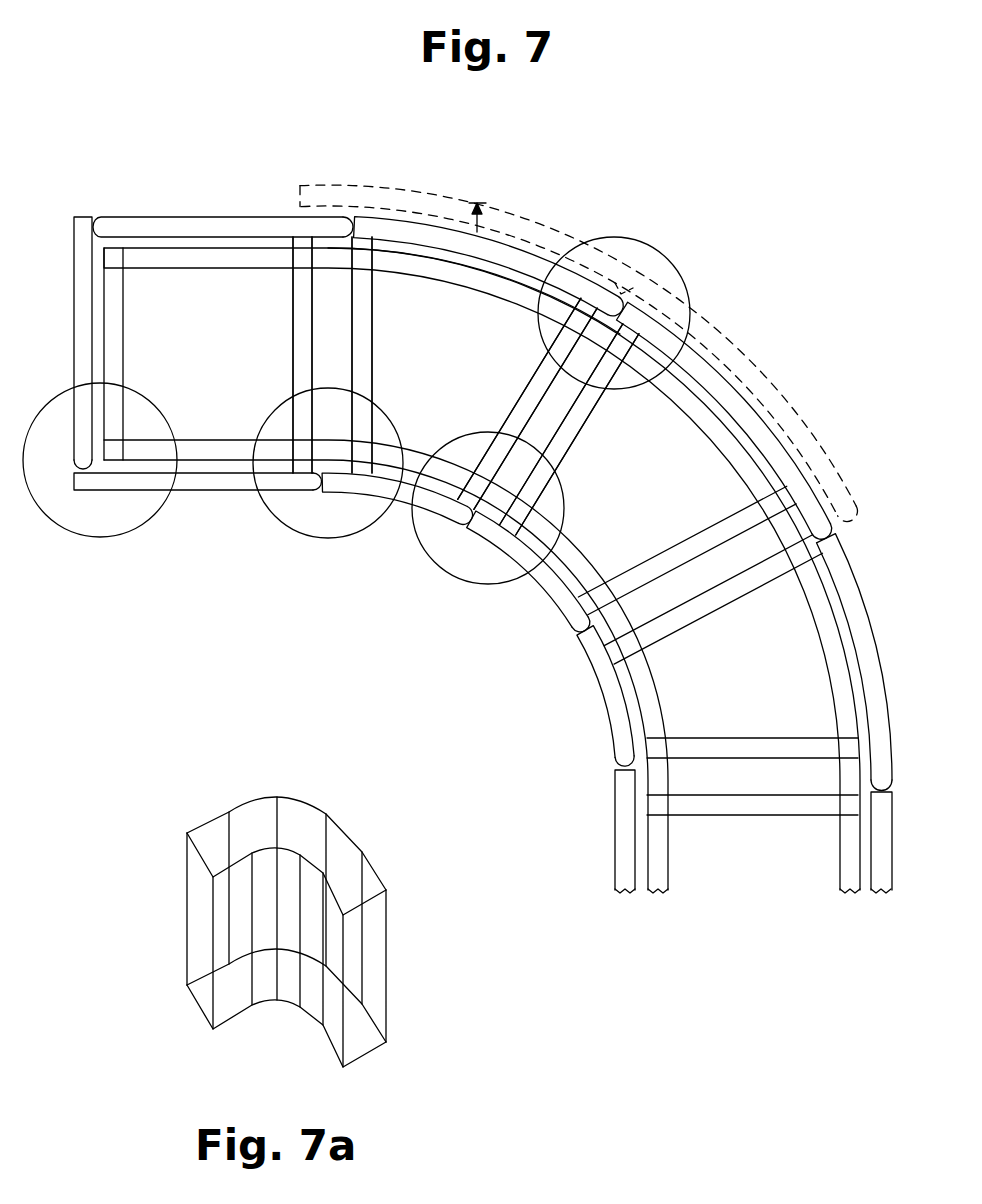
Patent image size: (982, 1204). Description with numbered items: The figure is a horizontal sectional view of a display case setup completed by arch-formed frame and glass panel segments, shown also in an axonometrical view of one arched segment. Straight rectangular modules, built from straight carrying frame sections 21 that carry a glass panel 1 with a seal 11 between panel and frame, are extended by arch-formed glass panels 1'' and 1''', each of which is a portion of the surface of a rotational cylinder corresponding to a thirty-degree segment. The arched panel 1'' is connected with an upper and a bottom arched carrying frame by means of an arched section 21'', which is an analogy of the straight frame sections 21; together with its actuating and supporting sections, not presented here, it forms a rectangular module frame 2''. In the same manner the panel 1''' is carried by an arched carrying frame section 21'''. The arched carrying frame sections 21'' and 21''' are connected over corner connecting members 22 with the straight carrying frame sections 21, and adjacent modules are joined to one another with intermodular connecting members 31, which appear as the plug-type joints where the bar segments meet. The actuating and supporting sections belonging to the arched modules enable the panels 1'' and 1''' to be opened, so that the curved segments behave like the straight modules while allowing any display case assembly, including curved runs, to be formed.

The glass panel 1 is at (213, 425).
The arch-formed glass panel 1'' is at (578, 359).
The arch-formed glass panel 1''' is at (520, 596).
The rectangular module frame 2'' is at (483, 570).
The seal 11 is at (655, 245).
The straight frame section 21 is at (375, 348).
The arched carrying frame section 21'' is at (474, 246).
The arched carrying frame section 21''' is at (386, 632).
The corner connecting member 22 is at (301, 255).
The intermodular connecting member 31 is at (337, 257).